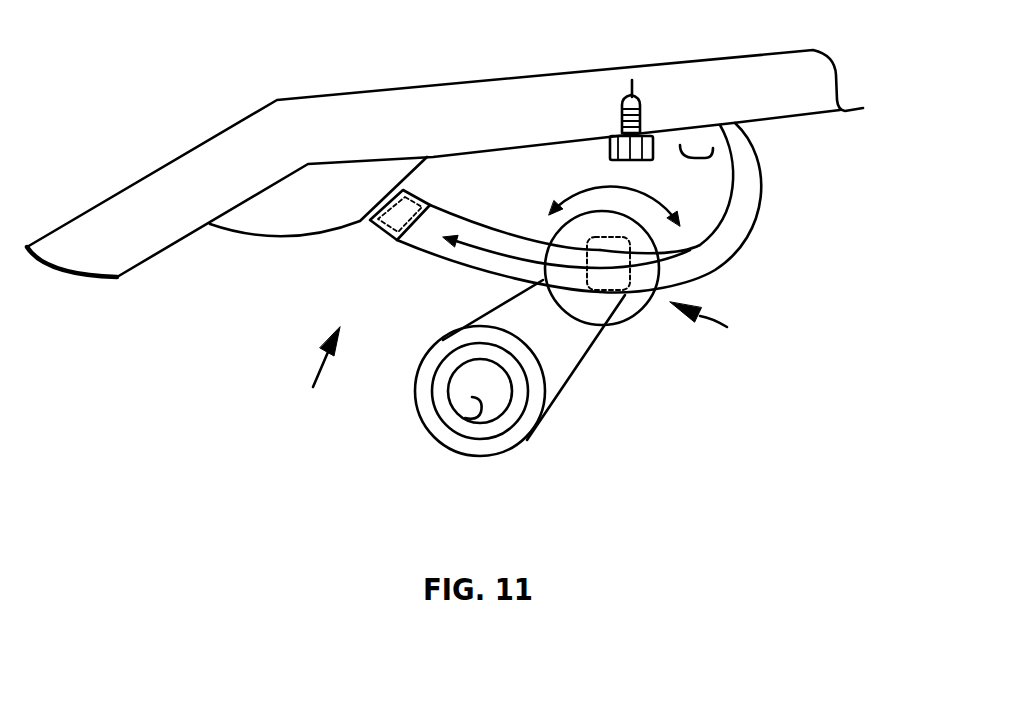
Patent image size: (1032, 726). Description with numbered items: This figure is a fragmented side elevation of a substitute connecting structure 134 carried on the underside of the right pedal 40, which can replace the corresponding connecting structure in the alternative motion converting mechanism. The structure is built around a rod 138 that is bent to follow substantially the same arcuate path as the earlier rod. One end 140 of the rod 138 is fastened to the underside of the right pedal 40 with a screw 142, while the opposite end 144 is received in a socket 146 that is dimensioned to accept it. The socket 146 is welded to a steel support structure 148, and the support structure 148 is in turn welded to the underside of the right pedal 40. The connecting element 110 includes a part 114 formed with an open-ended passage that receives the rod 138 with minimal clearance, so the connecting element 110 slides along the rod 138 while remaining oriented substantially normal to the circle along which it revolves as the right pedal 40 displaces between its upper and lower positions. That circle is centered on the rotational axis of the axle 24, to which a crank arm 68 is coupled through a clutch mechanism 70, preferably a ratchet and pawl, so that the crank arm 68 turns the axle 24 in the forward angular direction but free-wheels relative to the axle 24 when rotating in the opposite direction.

The right pedal 40 is at (240, 122).
The screw 142 is at (600, 148).
The socket 146 is at (425, 200).
The one end of rod 140 is at (710, 158).
The rod 138 is at (757, 217).
The support structure 148 is at (273, 237).
The opposite end of rod 144 is at (390, 236).
The substitute connecting structure 134 is at (315, 375).
The connecting element 110 is at (728, 326).
The part 114 is at (608, 292).
The crank arm 68 is at (557, 357).
The axle 24 is at (470, 417).
The clutch mechanism 70 is at (512, 437).